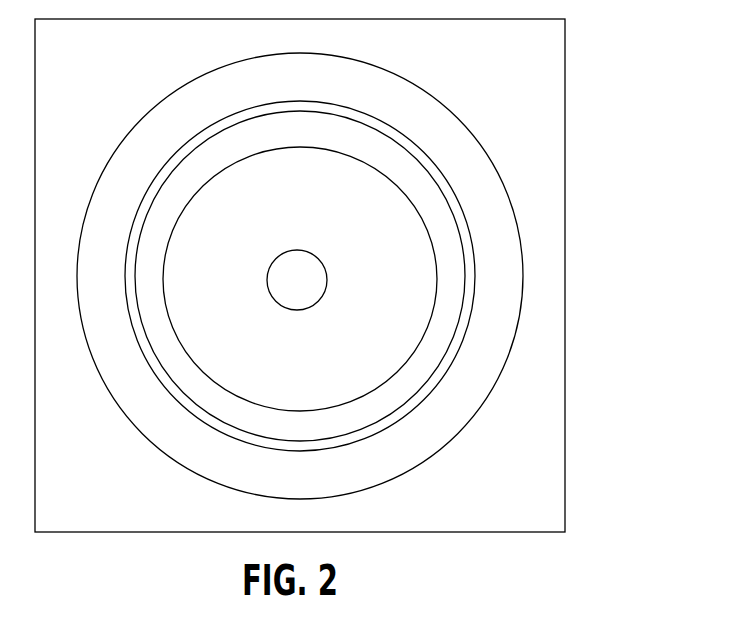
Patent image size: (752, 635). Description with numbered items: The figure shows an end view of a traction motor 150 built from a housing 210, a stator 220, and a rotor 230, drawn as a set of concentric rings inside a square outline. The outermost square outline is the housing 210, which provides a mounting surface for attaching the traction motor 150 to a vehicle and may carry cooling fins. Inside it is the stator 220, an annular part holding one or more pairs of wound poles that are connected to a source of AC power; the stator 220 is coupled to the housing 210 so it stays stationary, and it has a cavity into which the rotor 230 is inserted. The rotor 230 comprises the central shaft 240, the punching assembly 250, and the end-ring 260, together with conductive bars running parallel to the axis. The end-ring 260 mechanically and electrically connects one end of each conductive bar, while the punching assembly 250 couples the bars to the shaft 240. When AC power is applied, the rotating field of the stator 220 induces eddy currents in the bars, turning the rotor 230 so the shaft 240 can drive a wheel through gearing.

The traction motor 150 is at (600, 66).
The housing 210 is at (539, 508).
The stator 220 is at (315, 86).
The rotor 230 is at (376, 116).
The shaft 240 is at (311, 288).
The punching assembly 250 is at (317, 198).
The end-ring 260 is at (315, 136).